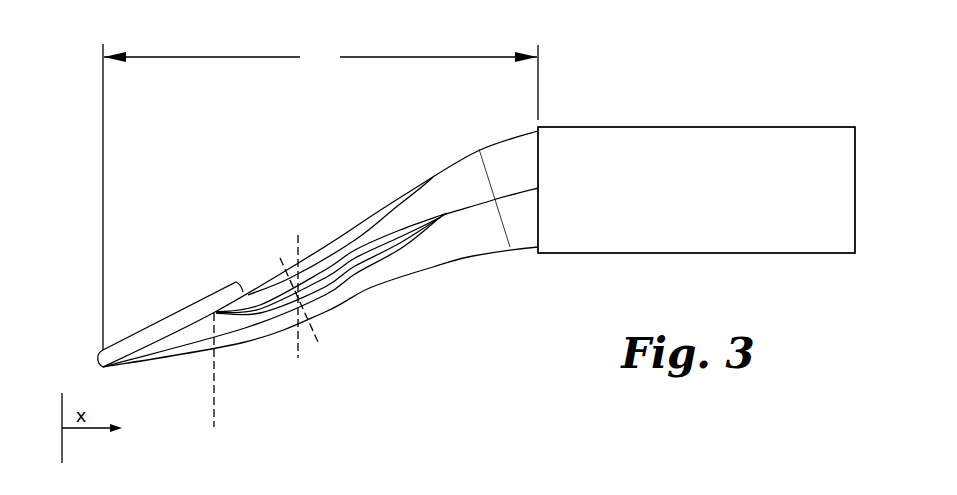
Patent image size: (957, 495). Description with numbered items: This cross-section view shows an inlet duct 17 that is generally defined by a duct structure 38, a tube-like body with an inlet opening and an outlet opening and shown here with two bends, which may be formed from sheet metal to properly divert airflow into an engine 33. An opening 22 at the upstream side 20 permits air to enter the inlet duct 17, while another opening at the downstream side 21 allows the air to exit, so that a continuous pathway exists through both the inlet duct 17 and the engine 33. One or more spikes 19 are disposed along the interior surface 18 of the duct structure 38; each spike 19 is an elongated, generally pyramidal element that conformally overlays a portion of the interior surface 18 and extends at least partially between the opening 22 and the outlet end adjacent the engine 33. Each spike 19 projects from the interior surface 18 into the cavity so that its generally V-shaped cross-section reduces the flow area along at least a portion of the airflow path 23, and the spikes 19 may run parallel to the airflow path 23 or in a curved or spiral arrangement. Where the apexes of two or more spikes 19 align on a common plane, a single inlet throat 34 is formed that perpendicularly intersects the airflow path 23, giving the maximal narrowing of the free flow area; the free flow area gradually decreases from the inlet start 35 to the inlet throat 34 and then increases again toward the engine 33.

The inlet duct 17 is at (320, 197).
The interior surface 18 is at (460, 233).
The spike 19 is at (322, 273).
The upstream side 20 is at (61, 341).
The downstream side 21 is at (875, 173).
The opening 22 is at (174, 311).
The airflow path 23 is at (446, 214).
The engine 33 is at (660, 203).
The inlet throat 34 is at (312, 332).
The inlet start 35 is at (213, 383).
The duct structure 38 is at (479, 149).